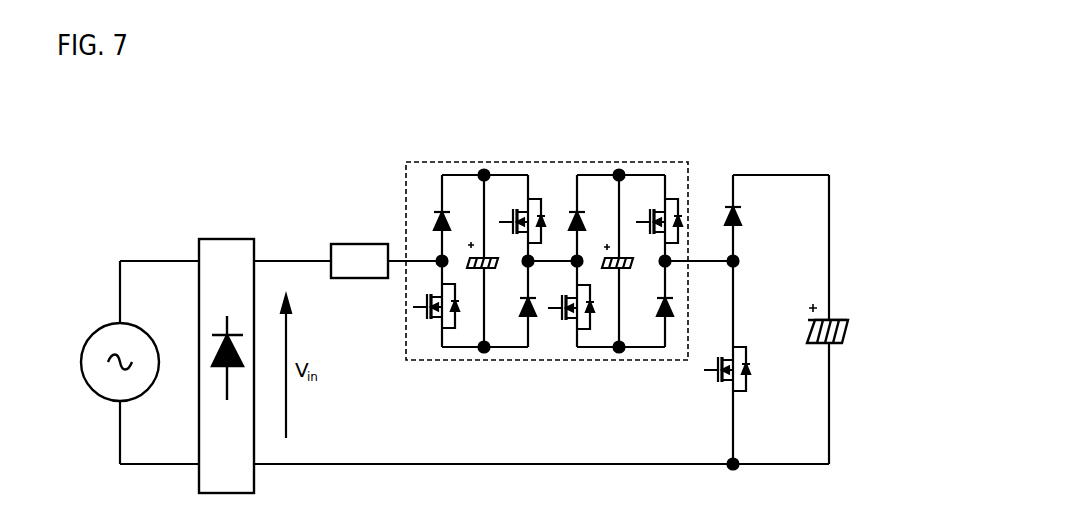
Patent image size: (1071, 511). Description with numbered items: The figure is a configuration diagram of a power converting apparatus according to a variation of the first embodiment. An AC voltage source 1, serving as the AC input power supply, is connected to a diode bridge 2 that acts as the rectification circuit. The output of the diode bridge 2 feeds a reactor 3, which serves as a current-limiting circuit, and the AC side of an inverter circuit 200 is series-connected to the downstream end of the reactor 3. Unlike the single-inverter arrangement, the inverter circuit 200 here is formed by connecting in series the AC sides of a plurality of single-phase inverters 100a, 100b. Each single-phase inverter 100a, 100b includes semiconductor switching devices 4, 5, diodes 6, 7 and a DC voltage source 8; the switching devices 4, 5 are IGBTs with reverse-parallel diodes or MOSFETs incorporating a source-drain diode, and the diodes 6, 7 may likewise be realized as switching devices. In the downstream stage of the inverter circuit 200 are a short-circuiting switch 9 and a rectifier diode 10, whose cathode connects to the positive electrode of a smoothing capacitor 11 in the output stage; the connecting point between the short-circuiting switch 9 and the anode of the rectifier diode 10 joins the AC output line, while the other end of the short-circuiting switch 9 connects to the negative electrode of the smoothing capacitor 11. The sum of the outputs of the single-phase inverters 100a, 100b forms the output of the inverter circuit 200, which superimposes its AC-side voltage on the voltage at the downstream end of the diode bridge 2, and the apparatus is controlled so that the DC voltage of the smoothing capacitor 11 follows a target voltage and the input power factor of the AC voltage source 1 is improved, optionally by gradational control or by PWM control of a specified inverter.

The AC voltage source 1 is at (80, 368).
The diode bridge 2 is at (198, 235).
The reactor 3 is at (338, 238).
The semiconductor switching device 4 is at (423, 325).
The semiconductor switching device 5 is at (515, 197).
The diode 6 is at (427, 223).
The diode 7 is at (525, 323).
The DC voltage source 8 is at (472, 275).
The short-circuiting switch 9 is at (713, 388).
The rectifier diode 10 is at (742, 222).
The smoothing capacitor 11 is at (840, 315).
The single-phase inverter 100a is at (457, 177).
The single-phase inverter 100b is at (595, 177).
The inverter circuit 200 is at (403, 160).